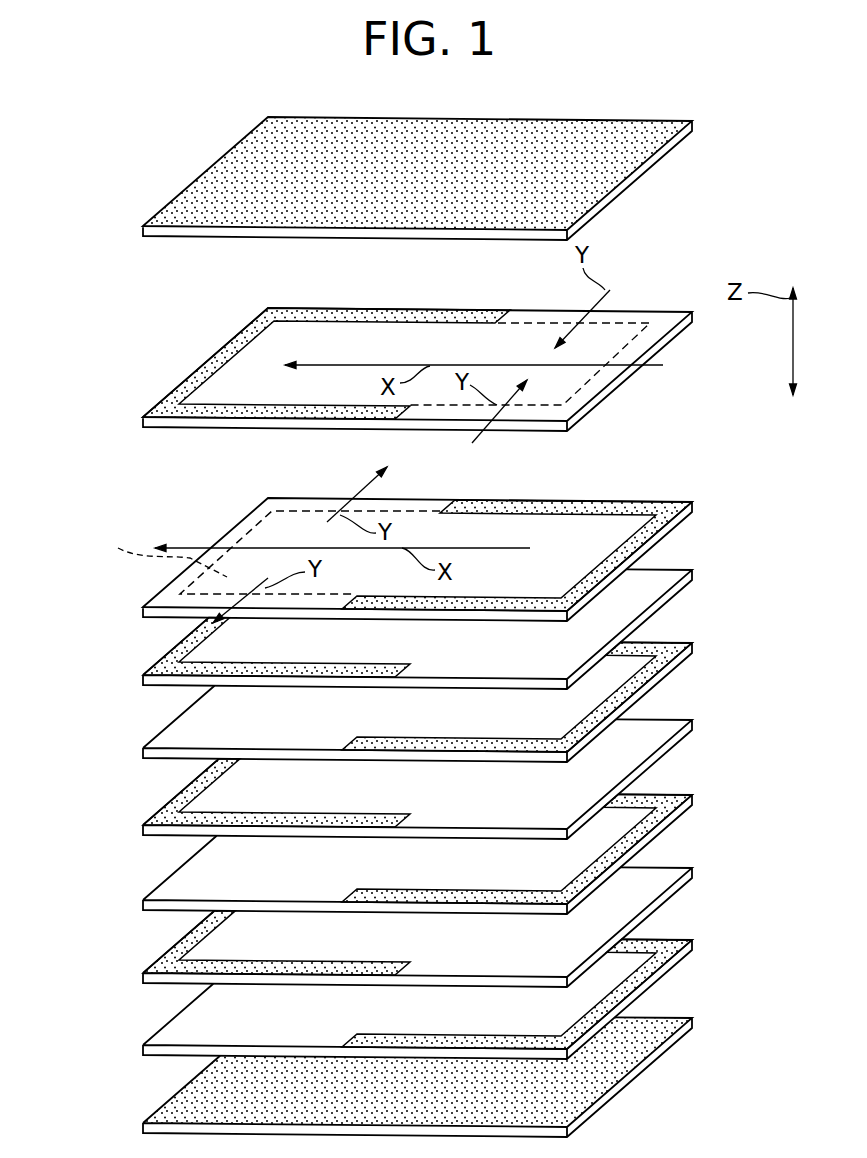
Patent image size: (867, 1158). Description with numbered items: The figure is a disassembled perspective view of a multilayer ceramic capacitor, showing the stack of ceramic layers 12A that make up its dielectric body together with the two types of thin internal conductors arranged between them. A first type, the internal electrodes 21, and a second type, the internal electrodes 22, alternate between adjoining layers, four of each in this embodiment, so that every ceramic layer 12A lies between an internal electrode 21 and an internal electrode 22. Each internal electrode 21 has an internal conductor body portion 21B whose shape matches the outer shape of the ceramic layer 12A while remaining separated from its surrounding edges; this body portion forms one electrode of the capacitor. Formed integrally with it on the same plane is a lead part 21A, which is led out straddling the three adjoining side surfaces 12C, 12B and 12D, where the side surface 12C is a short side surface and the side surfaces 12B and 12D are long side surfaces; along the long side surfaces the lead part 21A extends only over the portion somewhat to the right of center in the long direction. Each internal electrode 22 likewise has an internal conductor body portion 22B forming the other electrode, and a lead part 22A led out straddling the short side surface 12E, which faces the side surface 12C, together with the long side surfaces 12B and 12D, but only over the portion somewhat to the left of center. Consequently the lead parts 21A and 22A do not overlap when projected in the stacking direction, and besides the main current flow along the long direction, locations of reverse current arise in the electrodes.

The ceramic layer 12A is at (604, 170).
The side surface 12B is at (402, 428).
The side surface 12C is at (620, 377).
The side surface 12D is at (478, 312).
The side surface 12E is at (213, 357).
The internal electrode 21 is at (367, 340).
The lead part 21A is at (580, 392).
The internal conductor body portion 21B is at (617, 337).
The internal electrode 22 is at (575, 527).
The lead part 22A is at (257, 515).
The internal conductor body portion 22B is at (155, 549).